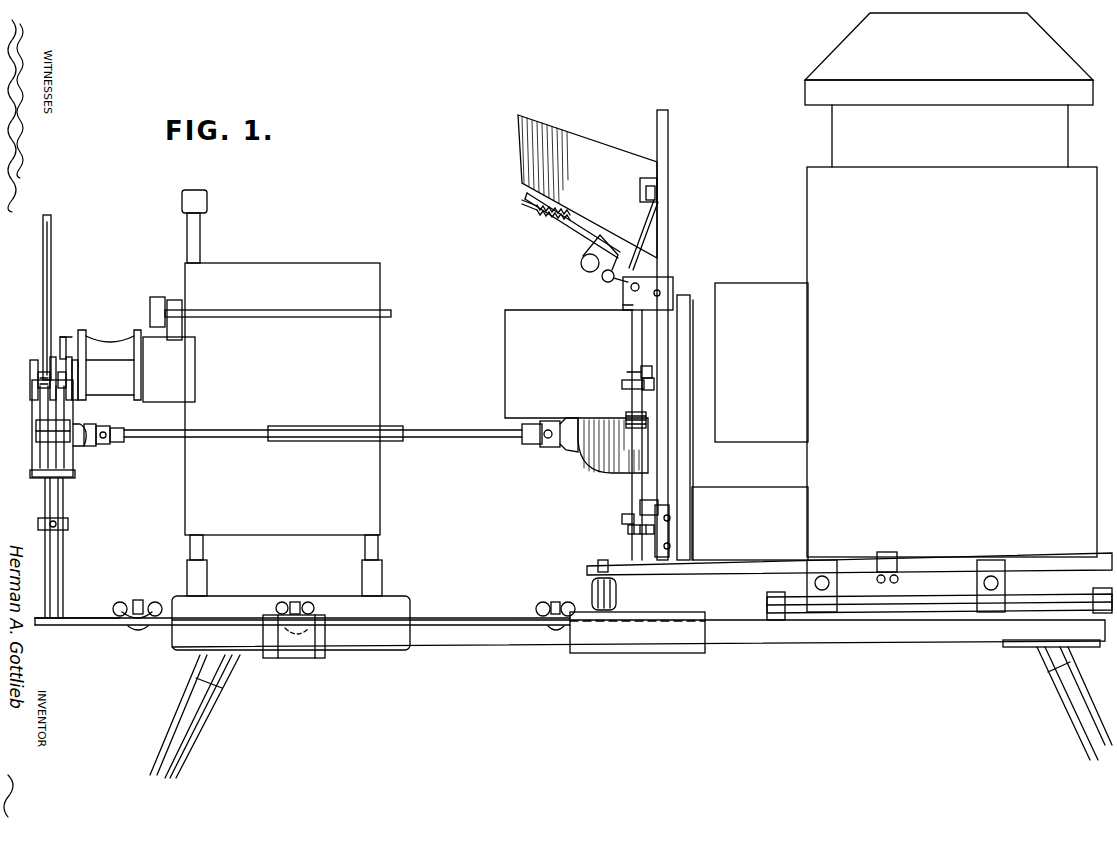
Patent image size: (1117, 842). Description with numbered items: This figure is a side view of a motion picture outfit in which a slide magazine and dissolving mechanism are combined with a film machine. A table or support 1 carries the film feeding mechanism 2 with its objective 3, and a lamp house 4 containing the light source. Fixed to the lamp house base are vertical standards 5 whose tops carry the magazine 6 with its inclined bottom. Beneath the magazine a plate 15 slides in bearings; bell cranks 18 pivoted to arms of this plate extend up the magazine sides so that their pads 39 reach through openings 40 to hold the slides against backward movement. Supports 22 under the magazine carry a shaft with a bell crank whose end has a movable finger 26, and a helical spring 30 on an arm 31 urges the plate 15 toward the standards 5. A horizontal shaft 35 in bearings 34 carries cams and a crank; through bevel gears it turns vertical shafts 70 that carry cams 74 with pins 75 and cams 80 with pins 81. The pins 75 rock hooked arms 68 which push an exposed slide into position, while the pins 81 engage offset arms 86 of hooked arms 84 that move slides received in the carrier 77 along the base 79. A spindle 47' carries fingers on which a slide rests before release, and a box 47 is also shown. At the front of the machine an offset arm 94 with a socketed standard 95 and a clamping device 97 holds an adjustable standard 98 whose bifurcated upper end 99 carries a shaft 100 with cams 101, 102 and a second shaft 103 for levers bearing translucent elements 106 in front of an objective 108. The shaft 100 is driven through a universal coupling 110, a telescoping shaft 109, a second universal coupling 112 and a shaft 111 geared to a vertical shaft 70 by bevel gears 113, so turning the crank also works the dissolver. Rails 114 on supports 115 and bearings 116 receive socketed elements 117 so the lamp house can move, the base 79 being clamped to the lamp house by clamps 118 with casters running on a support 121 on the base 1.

The table or support 1 is at (466, 648).
The film feeding mechanism 2 is at (330, 268).
The objective 3 is at (103, 342).
The lamp house 4 is at (951, 285).
The standards 5 is at (668, 140).
The magazine 6 is at (580, 145).
The plate 15 is at (572, 226).
The bell cranks 18 is at (647, 235).
The supports 22 is at (582, 259).
The movable finger 26 is at (604, 283).
The helical spring 30 is at (545, 218).
The arm 31 is at (522, 203).
The bearings 34 is at (662, 280).
The shaft 35 is at (626, 309).
The cushions or pads 39 is at (656, 199).
The openings 40 is at (655, 182).
The box 47 is at (550, 364).
The spindle or shaft 47' is at (672, 283).
The hooked arms 68 is at (650, 378).
The vertically extending shafts 70 is at (634, 490).
The cams 74 is at (620, 387).
The pins 75 is at (634, 373).
The movable carrier 77 is at (750, 523).
The base 79 is at (726, 568).
The cams 80 is at (628, 531).
The pins 81 is at (622, 519).
The hooked arms 84 is at (656, 557).
The offset arms 86 is at (640, 507).
The offset arm 94 is at (104, 627).
The socketed standard 95 is at (64, 574).
The adjustable clamping device 97 is at (139, 606).
The standard 98 is at (64, 500).
The bifurcated upper end 99 is at (33, 396).
The shaft 100 is at (82, 428).
The cam 101 is at (37, 443).
The cam 102 is at (62, 452).
The second shaft 103 is at (41, 368).
The translucent element 106 is at (78, 248).
The objective 108 is at (67, 335).
The telescoping shaft 109 is at (306, 440).
The universal coupling 110 is at (108, 442).
The shaft 111 is at (625, 416).
The second universal coupling 112 is at (543, 440).
The bevel gears 113 is at (630, 438).
The rails 114 is at (814, 583).
The supports 115 is at (1080, 596).
The bearings 116 is at (1006, 598).
The socketed elements 117 is at (992, 565).
The clamps 118 is at (300, 650).
The support 121 is at (690, 622).